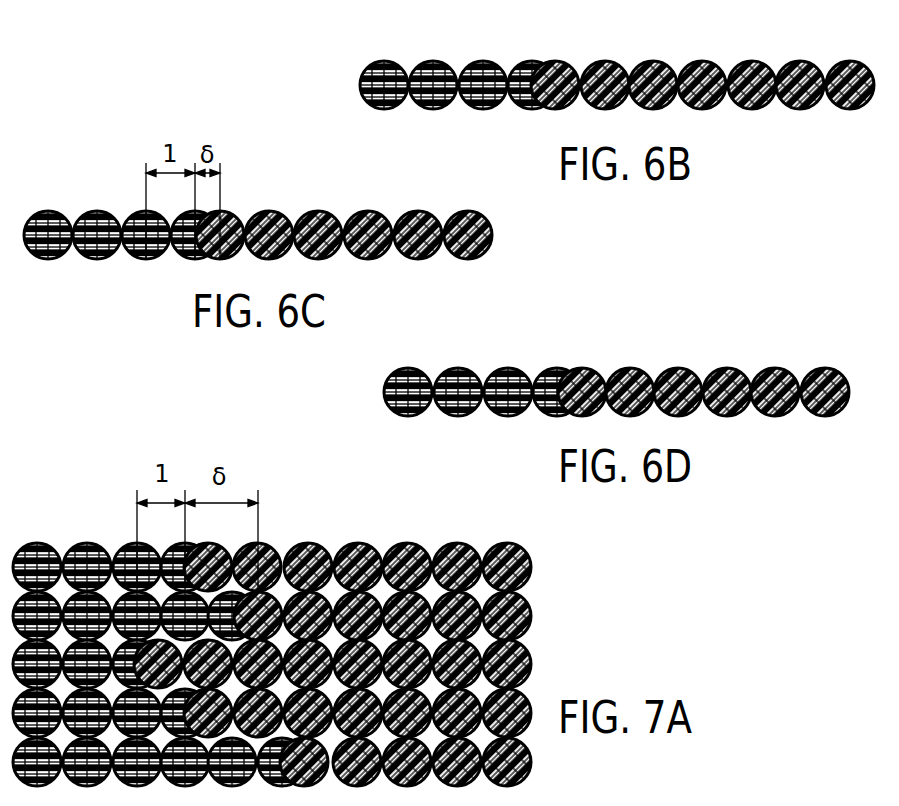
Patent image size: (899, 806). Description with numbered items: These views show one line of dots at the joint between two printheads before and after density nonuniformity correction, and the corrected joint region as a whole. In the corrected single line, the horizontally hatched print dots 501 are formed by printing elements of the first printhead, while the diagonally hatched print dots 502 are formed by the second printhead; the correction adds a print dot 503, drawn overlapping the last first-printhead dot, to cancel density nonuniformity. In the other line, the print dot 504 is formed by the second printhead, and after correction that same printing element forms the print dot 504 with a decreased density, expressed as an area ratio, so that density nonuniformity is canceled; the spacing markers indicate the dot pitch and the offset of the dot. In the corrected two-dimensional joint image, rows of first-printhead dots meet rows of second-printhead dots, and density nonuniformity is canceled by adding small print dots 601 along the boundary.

In FIG. 6B, the print dot formed by the first printhead 501 is at (525, 63).
In FIG. 6B, the print dot formed by the second printhead 502 is at (605, 62).
In FIG. 6B, the added print dot 503 is at (562, 62).
In FIG. 6C, the print dot formed by the second printhead 504 is at (230, 211).
In FIG. 6D, the print dot formed by the second printhead 504 is at (583, 372).
In FIG. 7A, the small print dots 601 is at (220, 551).